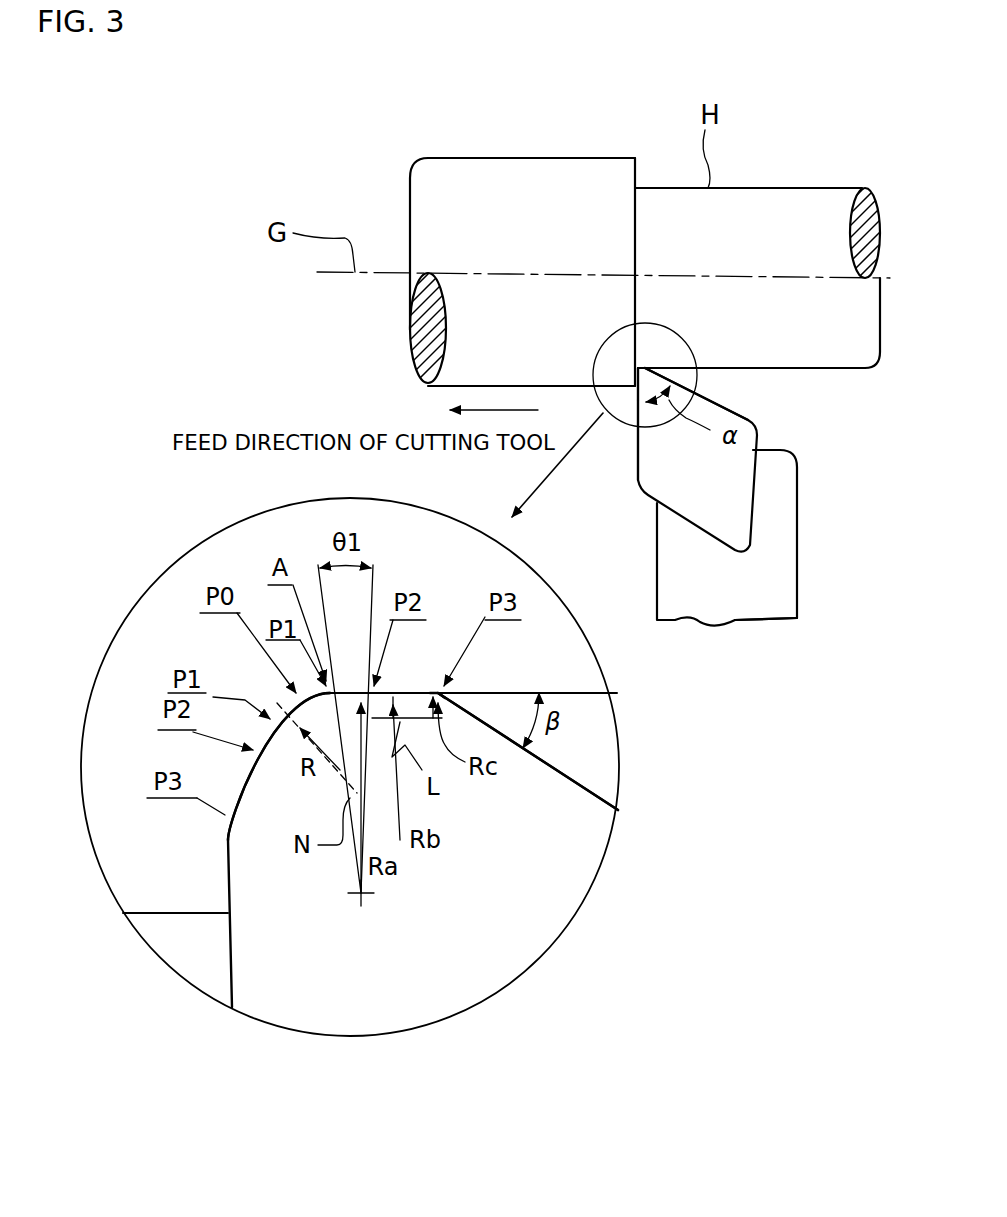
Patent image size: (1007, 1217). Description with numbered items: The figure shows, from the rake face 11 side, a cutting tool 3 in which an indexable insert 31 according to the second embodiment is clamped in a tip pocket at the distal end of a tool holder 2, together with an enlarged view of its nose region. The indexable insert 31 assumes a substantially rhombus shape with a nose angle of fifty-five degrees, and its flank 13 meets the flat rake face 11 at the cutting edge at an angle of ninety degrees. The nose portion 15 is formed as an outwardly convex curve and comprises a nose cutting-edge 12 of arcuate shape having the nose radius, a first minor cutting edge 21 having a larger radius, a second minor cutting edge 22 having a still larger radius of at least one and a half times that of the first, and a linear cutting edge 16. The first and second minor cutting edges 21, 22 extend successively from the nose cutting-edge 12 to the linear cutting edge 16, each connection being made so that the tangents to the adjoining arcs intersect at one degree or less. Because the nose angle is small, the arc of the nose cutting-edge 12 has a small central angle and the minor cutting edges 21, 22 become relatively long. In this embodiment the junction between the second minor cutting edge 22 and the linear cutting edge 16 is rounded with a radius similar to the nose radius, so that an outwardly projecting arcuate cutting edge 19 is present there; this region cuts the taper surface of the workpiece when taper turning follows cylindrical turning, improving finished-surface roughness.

The tool holder 2 is at (798, 538).
The cutting tool 3 is at (806, 612).
The rake face 11 is at (727, 490).
The nose cutting-edge 12 is at (645, 366).
The flank 13 is at (717, 400).
The nose portion 15 is at (626, 368).
The linear cutting edge 16 is at (697, 388).
The arcuate cutting edge 19 is at (443, 690).
The first minor cutting edge 21 is at (357, 688).
The second minor cutting edge 22 is at (399, 690).
The indexable insert 31 is at (634, 455).